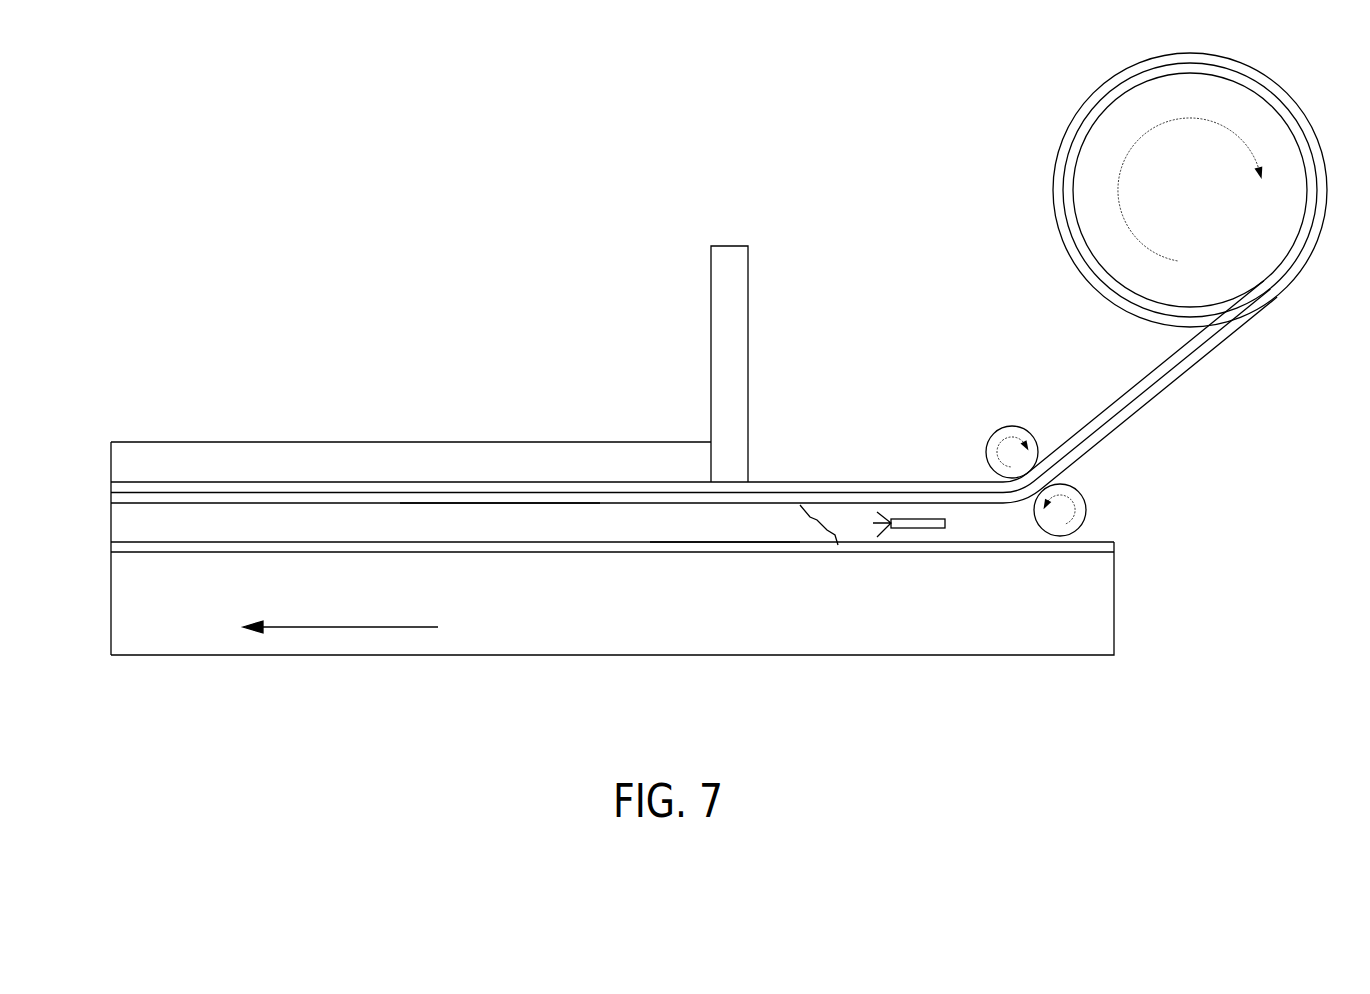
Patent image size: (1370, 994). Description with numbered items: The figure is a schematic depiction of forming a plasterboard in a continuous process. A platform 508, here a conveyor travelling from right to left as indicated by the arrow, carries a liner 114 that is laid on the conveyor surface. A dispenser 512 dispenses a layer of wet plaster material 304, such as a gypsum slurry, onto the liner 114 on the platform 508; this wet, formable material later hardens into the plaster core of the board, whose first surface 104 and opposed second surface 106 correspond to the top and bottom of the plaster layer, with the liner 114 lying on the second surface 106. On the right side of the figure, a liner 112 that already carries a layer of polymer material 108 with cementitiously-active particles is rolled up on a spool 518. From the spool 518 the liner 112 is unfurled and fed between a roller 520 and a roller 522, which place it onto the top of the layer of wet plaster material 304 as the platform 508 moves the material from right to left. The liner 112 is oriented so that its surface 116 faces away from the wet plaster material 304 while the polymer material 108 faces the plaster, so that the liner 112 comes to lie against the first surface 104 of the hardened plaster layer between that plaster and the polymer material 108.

The first surface 104 is at (485, 504).
The second surface 106 is at (423, 543).
The layer of polymer material 108 is at (834, 488).
The liner 112 is at (655, 500).
The liner 114 is at (720, 547).
The surface 116 is at (907, 495).
The layer of wet plaster material 304 is at (551, 530).
The platform 508 is at (848, 637).
The dispenser 512 is at (931, 528).
The spool 518 is at (1163, 205).
The roller 520 is at (1050, 418).
The roller 522 is at (1106, 486).